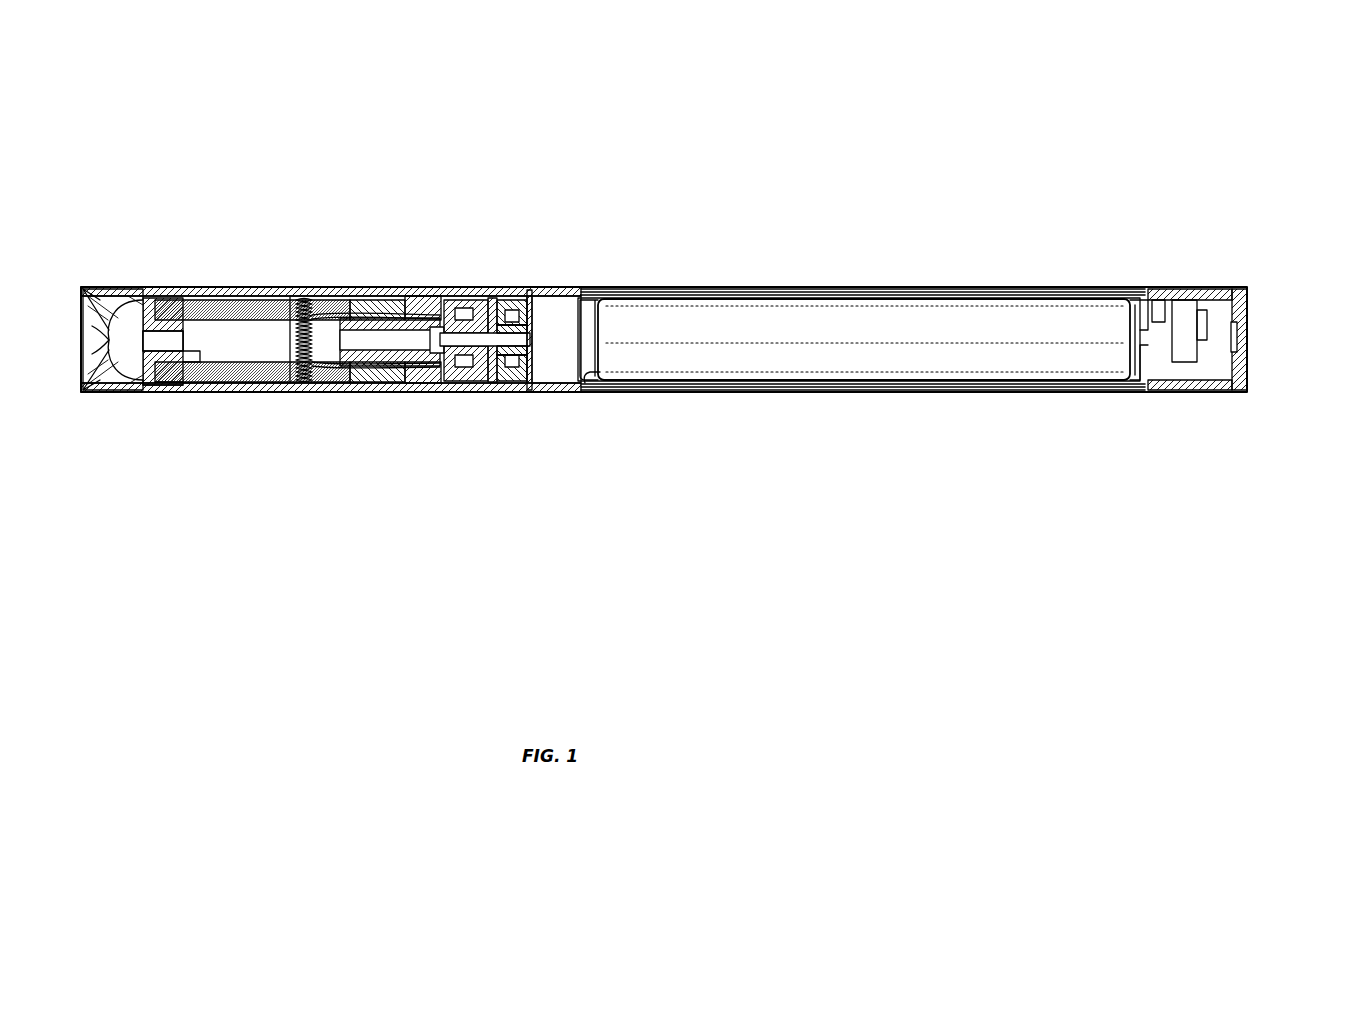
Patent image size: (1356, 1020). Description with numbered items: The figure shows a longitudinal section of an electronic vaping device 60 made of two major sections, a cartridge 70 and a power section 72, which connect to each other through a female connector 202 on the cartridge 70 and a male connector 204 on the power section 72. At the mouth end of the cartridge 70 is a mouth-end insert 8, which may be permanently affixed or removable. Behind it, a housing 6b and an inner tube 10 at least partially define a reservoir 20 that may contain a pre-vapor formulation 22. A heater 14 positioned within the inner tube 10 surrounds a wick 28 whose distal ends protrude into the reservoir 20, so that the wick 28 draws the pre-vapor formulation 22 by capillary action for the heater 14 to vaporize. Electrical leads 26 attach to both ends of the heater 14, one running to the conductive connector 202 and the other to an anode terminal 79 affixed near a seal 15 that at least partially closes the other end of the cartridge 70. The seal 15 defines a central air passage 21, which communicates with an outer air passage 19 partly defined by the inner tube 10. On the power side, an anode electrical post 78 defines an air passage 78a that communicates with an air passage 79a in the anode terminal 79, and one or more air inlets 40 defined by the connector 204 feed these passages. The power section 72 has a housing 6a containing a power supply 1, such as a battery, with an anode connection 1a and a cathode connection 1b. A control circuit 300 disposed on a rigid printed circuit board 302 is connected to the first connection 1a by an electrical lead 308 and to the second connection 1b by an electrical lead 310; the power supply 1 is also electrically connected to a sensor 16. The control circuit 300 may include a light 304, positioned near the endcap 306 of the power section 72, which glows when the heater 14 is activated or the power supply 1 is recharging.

The e-vaping device 60 is at (668, 158).
The housing of the cartridge 6b is at (155, 287).
The housing of the power section 6a is at (935, 287).
The mouth-end insert 8 is at (108, 287).
The reservoir 20 is at (200, 287).
The heater 14 is at (278, 334).
The pre-vapor formulation 22 is at (260, 287).
The inner tube 10 is at (185, 392).
The outer air passage 19 is at (238, 352).
The wick 28 is at (296, 287).
The cartridge 70 is at (325, 272).
The electrical leads 26 is at (372, 308).
The seal 15 is at (422, 287).
The central air passage 21 is at (392, 340).
The anode terminal 79 is at (486, 287).
The air passage of the anode terminal 79a is at (448, 362).
The female connector 202 is at (500, 287).
The male connector 204 is at (485, 370).
The anode electrical post 78 is at (520, 287).
The air passage of the anode post 78a is at (552, 345).
The air inlets 40 is at (528, 376).
The electrical lead 308 is at (590, 287).
The electrical lead 310 is at (640, 392).
The power section 72 is at (782, 282).
The power supply 1 is at (838, 325).
The anode connection 1a is at (588, 382).
The cathode connection 1b is at (1138, 384).
The endcap 306 is at (1244, 290).
The control circuit 300 is at (1162, 305).
The sensor 16 is at (1185, 315).
The printed circuit board 302 is at (1204, 325).
The light 304 is at (1236, 342).